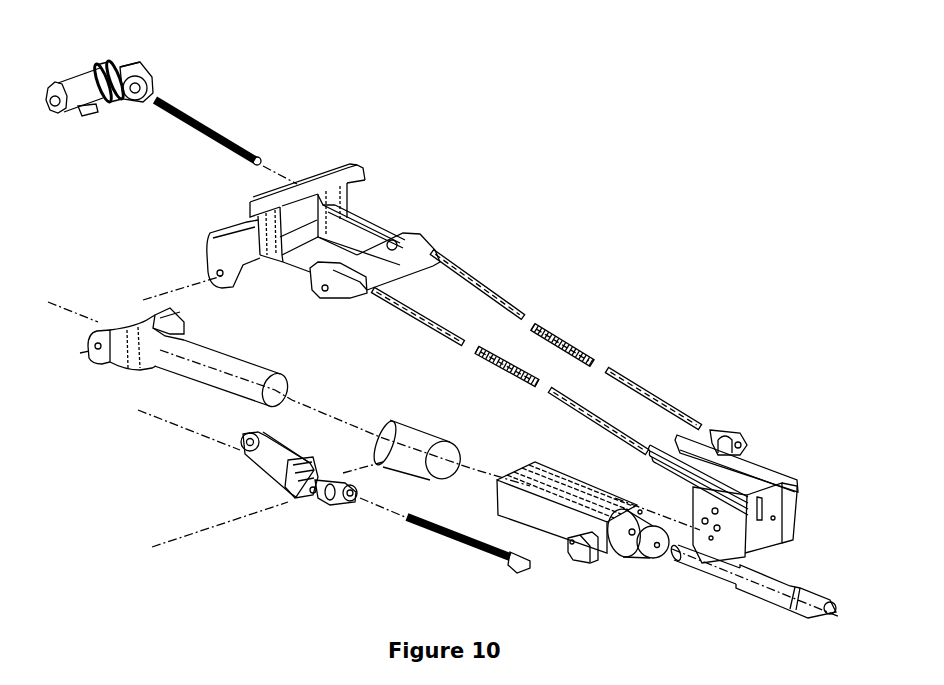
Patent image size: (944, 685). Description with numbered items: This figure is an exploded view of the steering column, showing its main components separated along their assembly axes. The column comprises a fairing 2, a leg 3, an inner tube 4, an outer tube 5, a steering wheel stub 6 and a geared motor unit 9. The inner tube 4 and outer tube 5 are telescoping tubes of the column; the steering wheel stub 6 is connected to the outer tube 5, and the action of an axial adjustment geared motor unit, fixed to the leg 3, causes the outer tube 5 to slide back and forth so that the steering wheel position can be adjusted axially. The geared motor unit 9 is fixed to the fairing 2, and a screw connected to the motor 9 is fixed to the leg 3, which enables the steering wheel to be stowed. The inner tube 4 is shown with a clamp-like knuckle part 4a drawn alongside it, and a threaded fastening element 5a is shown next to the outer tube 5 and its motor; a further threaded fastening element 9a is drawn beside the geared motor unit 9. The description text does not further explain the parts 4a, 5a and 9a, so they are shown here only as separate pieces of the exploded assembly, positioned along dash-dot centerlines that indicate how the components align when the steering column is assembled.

The fairing 2 is at (432, 244).
The leg 3 is at (778, 476).
The inner tube 4 is at (187, 367).
The knuckle joint 4a is at (270, 467).
The outer tube 5 is at (597, 562).
The drive screw 5a is at (450, 542).
The steering wheel stub 6 is at (812, 606).
The geared motor unit 9 is at (82, 78).
The fastening screw 9a is at (222, 130).